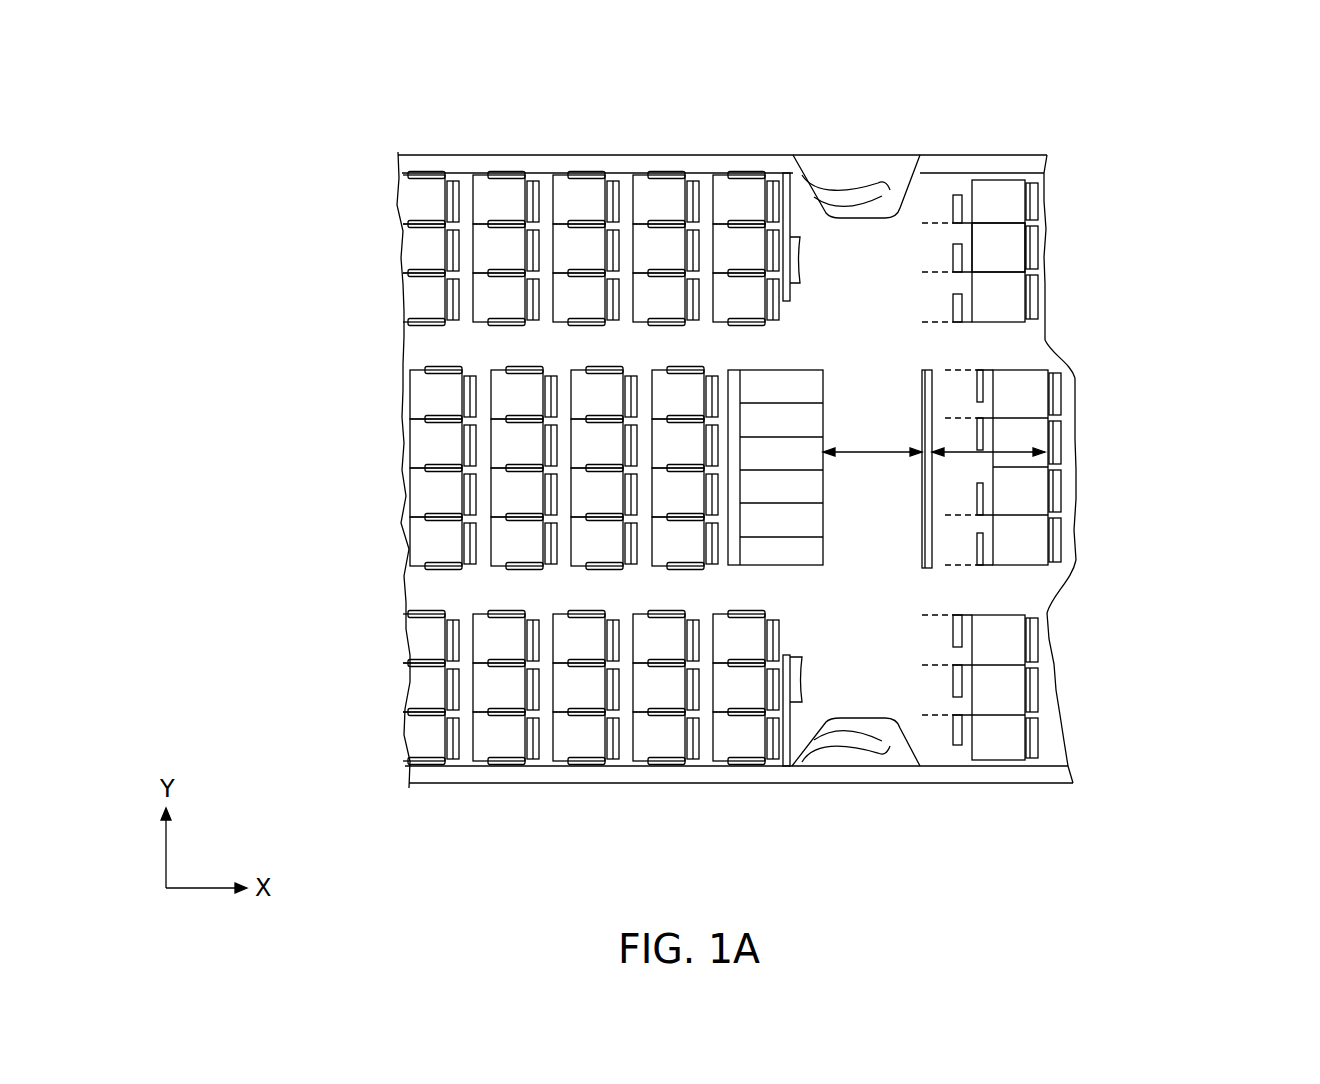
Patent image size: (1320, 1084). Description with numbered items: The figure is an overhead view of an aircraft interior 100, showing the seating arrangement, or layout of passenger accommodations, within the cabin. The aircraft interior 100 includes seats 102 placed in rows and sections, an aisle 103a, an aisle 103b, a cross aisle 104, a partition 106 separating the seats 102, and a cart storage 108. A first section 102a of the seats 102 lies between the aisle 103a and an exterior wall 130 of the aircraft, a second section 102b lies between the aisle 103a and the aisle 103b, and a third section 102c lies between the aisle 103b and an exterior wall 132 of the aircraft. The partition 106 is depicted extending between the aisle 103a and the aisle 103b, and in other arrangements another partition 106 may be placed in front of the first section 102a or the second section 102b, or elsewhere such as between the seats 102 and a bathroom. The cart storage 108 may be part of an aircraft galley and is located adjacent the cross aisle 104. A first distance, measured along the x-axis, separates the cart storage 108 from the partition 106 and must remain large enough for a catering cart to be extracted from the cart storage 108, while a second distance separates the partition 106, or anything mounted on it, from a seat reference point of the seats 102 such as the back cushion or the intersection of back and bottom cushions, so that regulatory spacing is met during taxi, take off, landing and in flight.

The aircraft interior 100 is at (366, 125).
The exterior wall 130 is at (990, 157).
The exterior wall 132 is at (950, 783).
The seats 102 is at (975, 262).
The first section 102a is at (1053, 155).
The second section 102b is at (1078, 365).
The third section 102c is at (1073, 603).
The aisle 103a is at (1045, 340).
The aisle 103b is at (1013, 588).
The cross aisle 104 is at (881, 504).
The partition 106 is at (922, 566).
The cart storage 108 is at (805, 388).